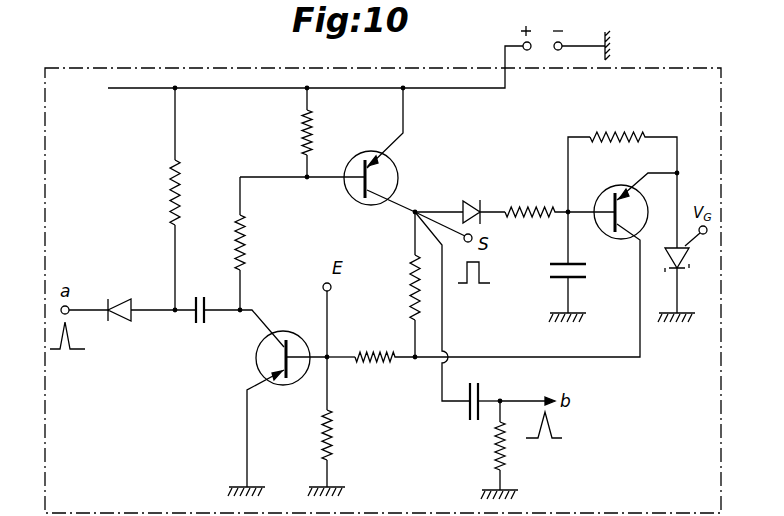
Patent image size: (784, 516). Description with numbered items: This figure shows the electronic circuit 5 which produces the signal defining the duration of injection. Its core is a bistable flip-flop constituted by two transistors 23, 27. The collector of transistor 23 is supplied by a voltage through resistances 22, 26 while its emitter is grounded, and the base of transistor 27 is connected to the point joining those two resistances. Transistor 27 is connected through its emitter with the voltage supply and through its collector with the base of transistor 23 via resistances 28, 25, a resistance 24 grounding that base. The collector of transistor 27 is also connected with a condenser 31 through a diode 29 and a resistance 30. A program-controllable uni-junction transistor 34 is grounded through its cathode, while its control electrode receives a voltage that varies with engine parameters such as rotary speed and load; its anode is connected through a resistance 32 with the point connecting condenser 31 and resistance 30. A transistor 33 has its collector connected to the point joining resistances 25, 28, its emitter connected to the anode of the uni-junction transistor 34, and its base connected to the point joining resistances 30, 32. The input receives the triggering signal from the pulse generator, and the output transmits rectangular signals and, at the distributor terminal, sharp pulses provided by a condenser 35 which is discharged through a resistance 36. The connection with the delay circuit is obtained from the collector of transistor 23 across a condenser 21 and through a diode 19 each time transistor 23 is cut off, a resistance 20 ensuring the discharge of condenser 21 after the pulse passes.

The electronic circuit 5 is at (100, 67).
The diode 19 is at (120, 298).
The resistance 20 is at (171, 182).
The condenser 21 is at (210, 322).
The resistance 22 is at (245, 250).
The transistor 23 is at (262, 368).
The resistance 24 is at (322, 440).
The resistance 25 is at (381, 352).
The resistance 26 is at (302, 134).
The transistor 27 is at (395, 173).
The resistance 28 is at (410, 290).
The diode 29 is at (467, 198).
The resistance 30 is at (527, 202).
The condenser 31 is at (575, 285).
The resistance 32 is at (618, 135).
The transistor 33 is at (613, 185).
The program-controllable uni-junction transistor 34 is at (686, 259).
The condenser 35 is at (466, 413).
The resistance 36 is at (496, 462).